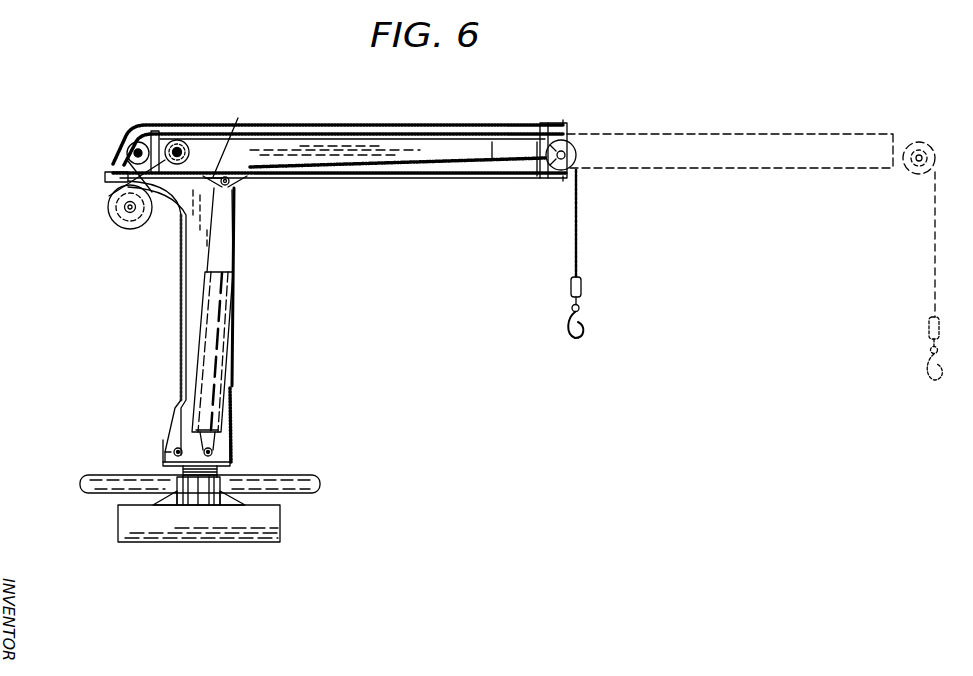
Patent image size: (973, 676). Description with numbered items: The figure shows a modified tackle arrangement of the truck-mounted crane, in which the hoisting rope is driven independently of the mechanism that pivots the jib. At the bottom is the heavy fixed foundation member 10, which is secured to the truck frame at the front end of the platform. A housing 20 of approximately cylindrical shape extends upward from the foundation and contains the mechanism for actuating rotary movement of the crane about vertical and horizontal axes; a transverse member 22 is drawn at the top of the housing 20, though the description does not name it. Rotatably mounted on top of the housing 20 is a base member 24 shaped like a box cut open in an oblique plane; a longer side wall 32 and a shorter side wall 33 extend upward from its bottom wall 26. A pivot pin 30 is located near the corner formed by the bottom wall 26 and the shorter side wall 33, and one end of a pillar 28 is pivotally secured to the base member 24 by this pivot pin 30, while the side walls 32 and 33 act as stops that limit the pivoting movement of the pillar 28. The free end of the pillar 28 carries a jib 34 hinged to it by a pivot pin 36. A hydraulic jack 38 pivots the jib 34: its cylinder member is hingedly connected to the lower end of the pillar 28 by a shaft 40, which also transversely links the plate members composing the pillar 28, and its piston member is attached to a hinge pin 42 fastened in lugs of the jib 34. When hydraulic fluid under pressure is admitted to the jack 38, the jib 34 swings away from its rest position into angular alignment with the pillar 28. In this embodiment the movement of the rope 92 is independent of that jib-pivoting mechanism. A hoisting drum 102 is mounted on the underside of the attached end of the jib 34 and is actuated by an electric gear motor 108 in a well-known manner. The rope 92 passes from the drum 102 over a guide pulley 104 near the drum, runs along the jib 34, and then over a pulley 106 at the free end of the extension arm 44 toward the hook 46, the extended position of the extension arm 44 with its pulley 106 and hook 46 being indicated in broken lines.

The foundation member 10 is at (280, 527).
The housing 20 is at (198, 498).
The crossbar 22 is at (317, 487).
The base member 24 is at (242, 384).
The bottom wall 26 is at (228, 470).
The pillar 28 is at (185, 293).
The pivot pin 30 is at (172, 452).
The longer side wall 32 is at (185, 418).
The shorter side wall 33 is at (167, 440).
The jib 34 is at (318, 122).
The pivot pin 36 is at (126, 154).
The hydraulic jack 38 is at (223, 302).
The shaft 40 is at (212, 450).
The hinge pin 42 is at (230, 181).
The extension arm 44 is at (387, 158).
The hook 46 is at (583, 313).
The rope 92 is at (580, 223).
The hoisting drum 102 is at (118, 218).
The guide pulley 104 is at (177, 140).
The pulley 106 is at (573, 145).
The electric gear motor 108 is at (234, 140).